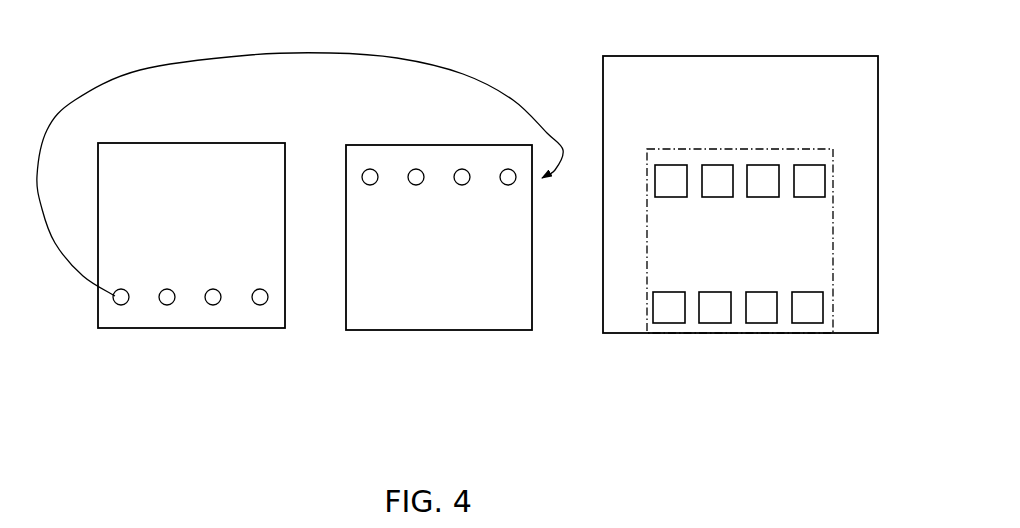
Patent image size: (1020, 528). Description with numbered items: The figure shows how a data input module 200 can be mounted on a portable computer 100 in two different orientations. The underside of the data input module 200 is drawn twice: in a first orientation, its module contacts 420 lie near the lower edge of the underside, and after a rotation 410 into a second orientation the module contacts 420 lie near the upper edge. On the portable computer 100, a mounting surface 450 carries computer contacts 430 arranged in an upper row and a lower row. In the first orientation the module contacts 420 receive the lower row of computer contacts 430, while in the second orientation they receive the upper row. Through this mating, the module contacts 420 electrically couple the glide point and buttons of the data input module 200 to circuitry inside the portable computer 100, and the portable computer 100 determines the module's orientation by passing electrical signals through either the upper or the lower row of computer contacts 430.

The portable computer 100 is at (740, 180).
The data input module 200 is at (317, 281).
The rotation 410 is at (300, 149).
The module contacts 420 is at (314, 237).
The computer contacts 430 is at (739, 244).
The mounting surface 450 is at (645, 228).